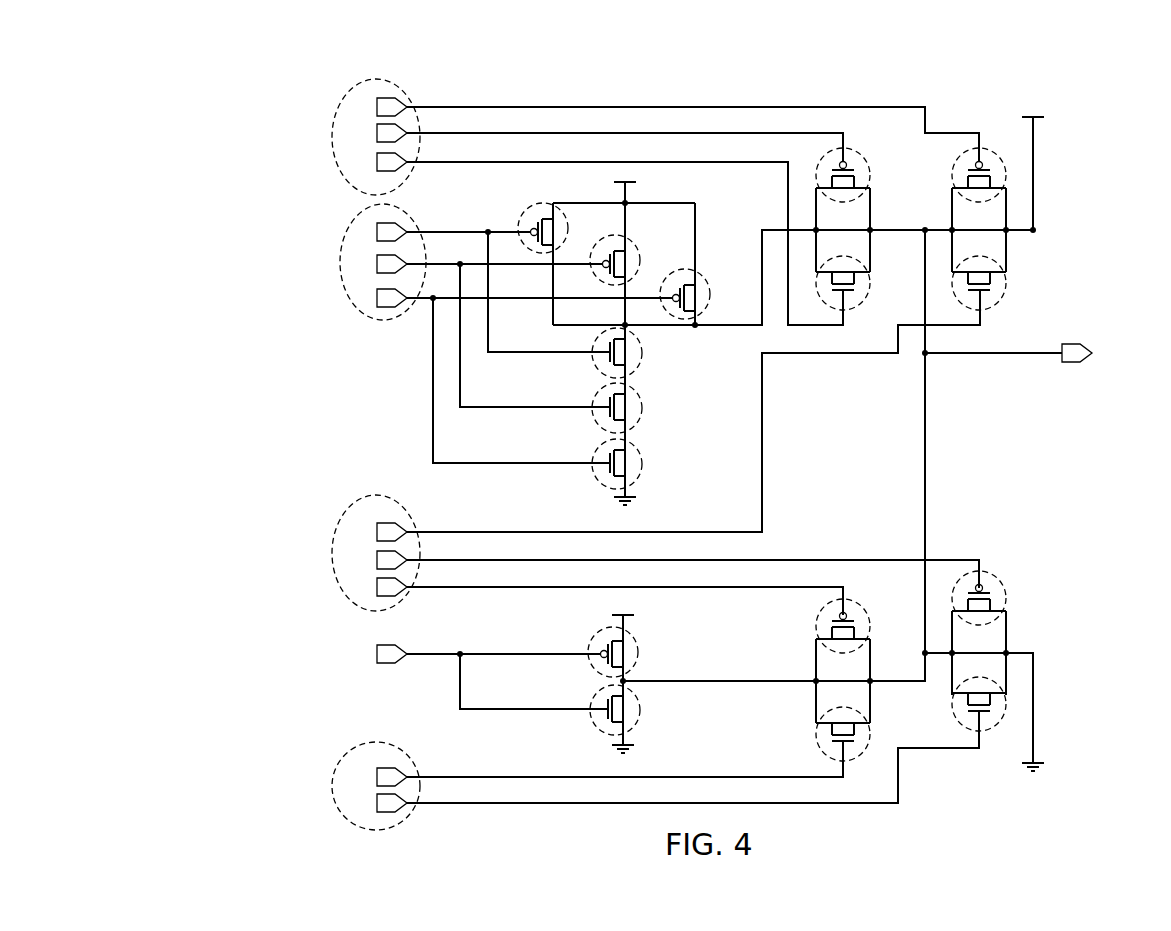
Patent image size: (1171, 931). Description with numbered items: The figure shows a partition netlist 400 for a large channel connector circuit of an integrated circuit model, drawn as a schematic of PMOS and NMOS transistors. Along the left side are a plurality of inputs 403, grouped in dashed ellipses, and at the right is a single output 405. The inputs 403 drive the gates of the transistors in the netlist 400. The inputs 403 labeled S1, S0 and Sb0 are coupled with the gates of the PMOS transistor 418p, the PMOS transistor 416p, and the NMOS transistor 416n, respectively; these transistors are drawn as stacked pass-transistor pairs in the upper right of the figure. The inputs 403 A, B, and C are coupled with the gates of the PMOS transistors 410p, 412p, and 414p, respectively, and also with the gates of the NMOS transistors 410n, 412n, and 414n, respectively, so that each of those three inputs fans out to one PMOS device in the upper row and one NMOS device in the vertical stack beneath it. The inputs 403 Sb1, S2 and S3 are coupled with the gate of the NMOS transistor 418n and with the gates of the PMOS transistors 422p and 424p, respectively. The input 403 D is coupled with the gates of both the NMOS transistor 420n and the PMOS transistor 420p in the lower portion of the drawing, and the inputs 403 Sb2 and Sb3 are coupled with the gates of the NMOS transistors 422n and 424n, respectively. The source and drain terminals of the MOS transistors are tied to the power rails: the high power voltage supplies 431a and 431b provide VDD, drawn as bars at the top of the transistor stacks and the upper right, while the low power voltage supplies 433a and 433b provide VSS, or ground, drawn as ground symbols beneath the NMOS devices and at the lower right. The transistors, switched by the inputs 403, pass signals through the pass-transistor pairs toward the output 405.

The partition netlist 400 is at (289, 94).
The inputs 403 is at (347, 182).
The output 405 is at (1071, 364).
The PMOS transistor 410p is at (520, 218).
The NMOS transistor 410n is at (600, 370).
The PMOS transistor 412p is at (604, 235).
The NMOS transistor 412n is at (633, 430).
The PMOS transistor 414p is at (735, 268).
The NMOS transistor 414n is at (600, 440).
The PMOS transistor 416p is at (830, 155).
The NMOS transistor 416n is at (862, 298).
The PMOS transistor 418p is at (955, 178).
The NMOS transistor 418n is at (1030, 313).
The PMOS transistor 420p is at (642, 640).
The NMOS transistor 420n is at (593, 717).
The PMOS transistor 422p is at (997, 570).
The NMOS transistor 422n is at (950, 700).
The PMOS transistor 424p is at (825, 597).
The NMOS transistor 424n is at (820, 735).
The high power voltage supply 431a is at (623, 182).
The high power voltage supply 431b is at (1037, 115).
The low power voltage supply 433a is at (630, 513).
The low power voltage supply 433b is at (1037, 770).